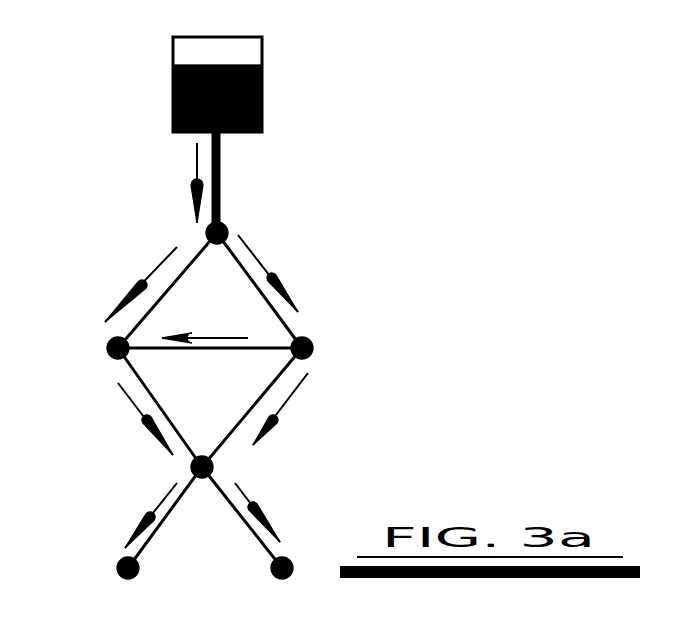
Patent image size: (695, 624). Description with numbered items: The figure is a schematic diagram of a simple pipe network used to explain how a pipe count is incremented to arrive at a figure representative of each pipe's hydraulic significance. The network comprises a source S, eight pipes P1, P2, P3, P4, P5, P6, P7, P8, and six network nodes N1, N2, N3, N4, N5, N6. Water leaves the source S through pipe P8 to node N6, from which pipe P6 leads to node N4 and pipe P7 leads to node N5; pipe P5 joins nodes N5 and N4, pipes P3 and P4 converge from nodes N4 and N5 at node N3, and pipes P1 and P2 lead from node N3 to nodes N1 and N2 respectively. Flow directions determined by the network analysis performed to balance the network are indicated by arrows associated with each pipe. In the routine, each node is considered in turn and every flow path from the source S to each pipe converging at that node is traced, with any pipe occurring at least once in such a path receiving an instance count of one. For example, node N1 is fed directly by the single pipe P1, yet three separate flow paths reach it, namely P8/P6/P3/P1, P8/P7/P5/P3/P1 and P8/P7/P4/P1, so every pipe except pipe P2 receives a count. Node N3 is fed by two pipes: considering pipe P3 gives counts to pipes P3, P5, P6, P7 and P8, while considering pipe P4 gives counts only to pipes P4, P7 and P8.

The source S is at (262, 82).
The network node N1 is at (116, 575).
The network node N2 is at (290, 577).
The network node N3 is at (230, 462).
The network node N4 is at (108, 353).
The network node N5 is at (312, 340).
The network node N6 is at (230, 232).
The pipe P1 is at (163, 517).
The pipe P2 is at (242, 517).
The pipe P3 is at (160, 407).
The pipe P4 is at (255, 407).
The pipe P5 is at (210, 358).
The pipe P6 is at (161, 290).
The pipe P7 is at (259, 290).
The pipe P8 is at (225, 182).